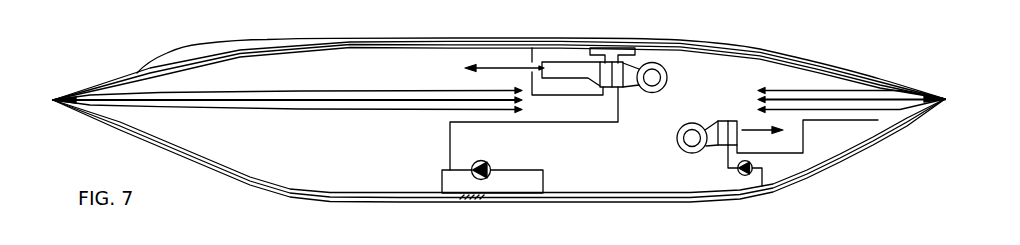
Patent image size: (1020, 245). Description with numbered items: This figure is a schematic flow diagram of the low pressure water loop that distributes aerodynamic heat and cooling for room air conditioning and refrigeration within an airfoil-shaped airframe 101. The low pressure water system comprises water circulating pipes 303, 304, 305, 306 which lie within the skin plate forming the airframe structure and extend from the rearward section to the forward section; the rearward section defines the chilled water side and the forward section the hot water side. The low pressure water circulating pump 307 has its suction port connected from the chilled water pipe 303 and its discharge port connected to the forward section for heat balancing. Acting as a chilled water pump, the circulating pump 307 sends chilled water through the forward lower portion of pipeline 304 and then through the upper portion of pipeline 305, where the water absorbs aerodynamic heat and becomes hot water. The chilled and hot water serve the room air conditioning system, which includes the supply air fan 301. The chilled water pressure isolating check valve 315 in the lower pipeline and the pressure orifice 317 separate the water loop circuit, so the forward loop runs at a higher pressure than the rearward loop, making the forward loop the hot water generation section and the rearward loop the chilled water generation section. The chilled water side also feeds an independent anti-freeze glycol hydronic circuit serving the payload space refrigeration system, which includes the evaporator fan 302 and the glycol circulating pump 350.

The underwater vehicle hull 101 is at (53, 96).
The supply air fan 301 is at (610, 90).
The evaporator fan 302 is at (677, 133).
The chilled water pipe 303 is at (673, 192).
The water circulating pipe 304 is at (202, 158).
The water circulating pipe 305 is at (272, 49).
The water circulating pipe 306 is at (758, 53).
The low pressure water circulating pump 307 is at (530, 140).
The chilled water pressure isolating check valve 315 is at (473, 202).
The pressure orifice 317 is at (569, 43).
The glycol circulating pump 350 is at (738, 171).